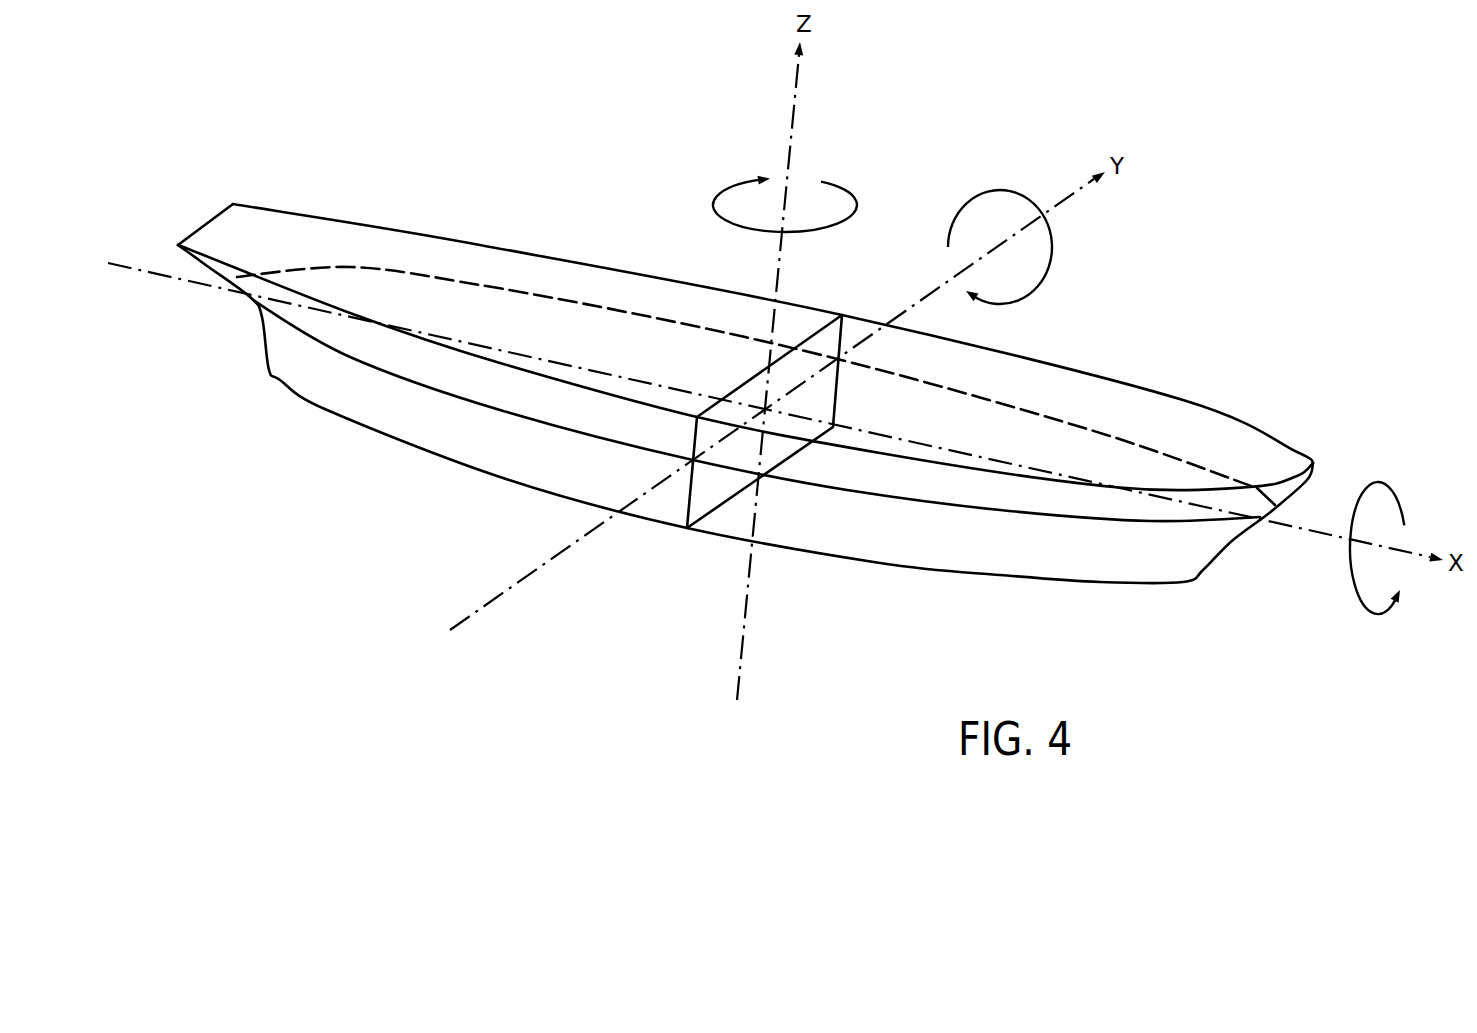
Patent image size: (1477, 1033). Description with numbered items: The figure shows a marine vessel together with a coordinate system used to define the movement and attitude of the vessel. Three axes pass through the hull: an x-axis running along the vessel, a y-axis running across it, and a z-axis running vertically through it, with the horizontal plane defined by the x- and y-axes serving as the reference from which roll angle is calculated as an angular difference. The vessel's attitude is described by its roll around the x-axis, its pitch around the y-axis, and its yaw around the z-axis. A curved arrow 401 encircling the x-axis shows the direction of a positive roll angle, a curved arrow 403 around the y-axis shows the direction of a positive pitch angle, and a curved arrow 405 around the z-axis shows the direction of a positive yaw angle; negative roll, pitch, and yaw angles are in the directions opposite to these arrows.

The arrow 401 is at (1350, 585).
The arrow 403 is at (1048, 277).
The arrow 405 is at (857, 210).